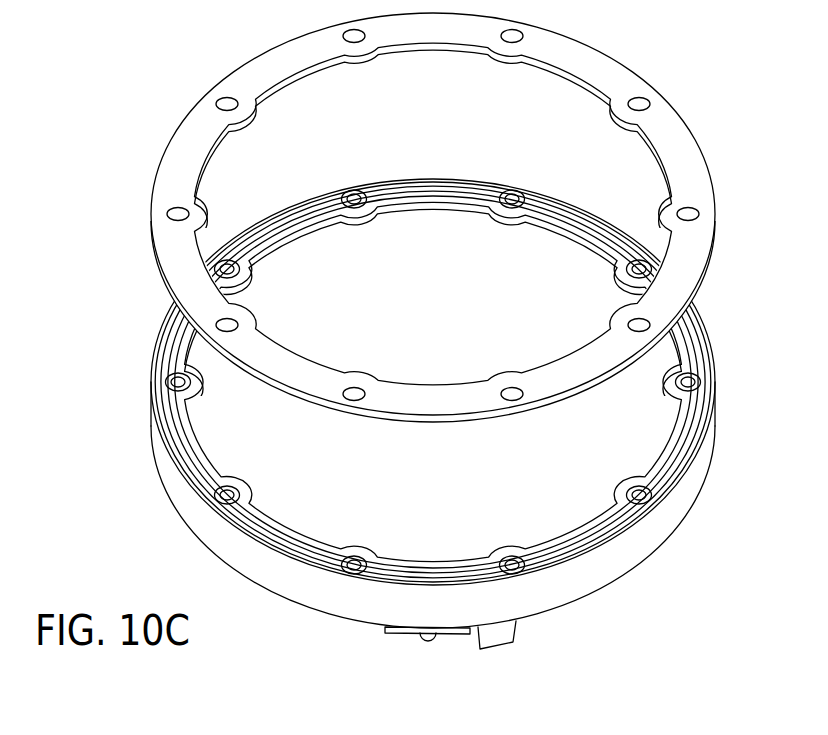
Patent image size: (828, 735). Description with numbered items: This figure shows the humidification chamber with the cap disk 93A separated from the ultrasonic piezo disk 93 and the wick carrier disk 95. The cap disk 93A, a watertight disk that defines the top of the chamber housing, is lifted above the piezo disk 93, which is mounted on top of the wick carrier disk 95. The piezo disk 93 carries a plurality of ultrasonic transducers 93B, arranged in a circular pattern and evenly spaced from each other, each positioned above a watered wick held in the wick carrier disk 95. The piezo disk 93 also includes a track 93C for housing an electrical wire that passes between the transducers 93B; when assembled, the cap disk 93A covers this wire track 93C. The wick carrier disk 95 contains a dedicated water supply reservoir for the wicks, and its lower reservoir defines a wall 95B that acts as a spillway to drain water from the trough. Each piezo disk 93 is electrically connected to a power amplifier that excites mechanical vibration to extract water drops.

The ultrasonic piezo disk 93 is at (702, 425).
The cap disk 93A is at (596, 67).
The ultrasonic transducer 93B is at (693, 379).
The track 93C is at (387, 570).
The wick carrier disk 95 is at (479, 515).
The wall 95B is at (683, 492).